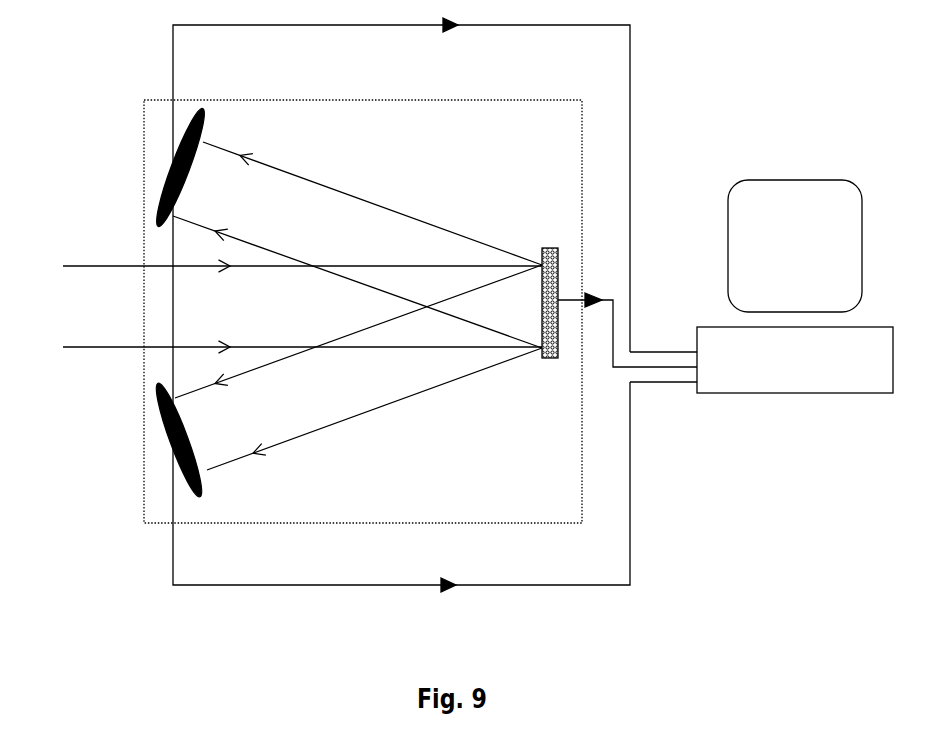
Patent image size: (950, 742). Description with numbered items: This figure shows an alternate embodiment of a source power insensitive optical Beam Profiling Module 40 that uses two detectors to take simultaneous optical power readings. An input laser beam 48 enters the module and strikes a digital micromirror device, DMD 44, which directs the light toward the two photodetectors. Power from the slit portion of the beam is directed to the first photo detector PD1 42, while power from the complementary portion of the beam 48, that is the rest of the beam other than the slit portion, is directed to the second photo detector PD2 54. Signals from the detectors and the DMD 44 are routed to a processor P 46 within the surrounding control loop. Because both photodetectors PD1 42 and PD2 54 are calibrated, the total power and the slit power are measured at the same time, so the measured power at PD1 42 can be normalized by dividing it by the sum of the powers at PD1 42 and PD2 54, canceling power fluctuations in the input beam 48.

The optical system / housing 40 is at (548, 138).
The photo detector PD1 42 is at (325, 142).
The digital micromirror device DMD 44 is at (551, 208).
The processor P 46 is at (848, 379).
The input beam 48 is at (100, 265).
The photo detector PD2 54 is at (335, 508).